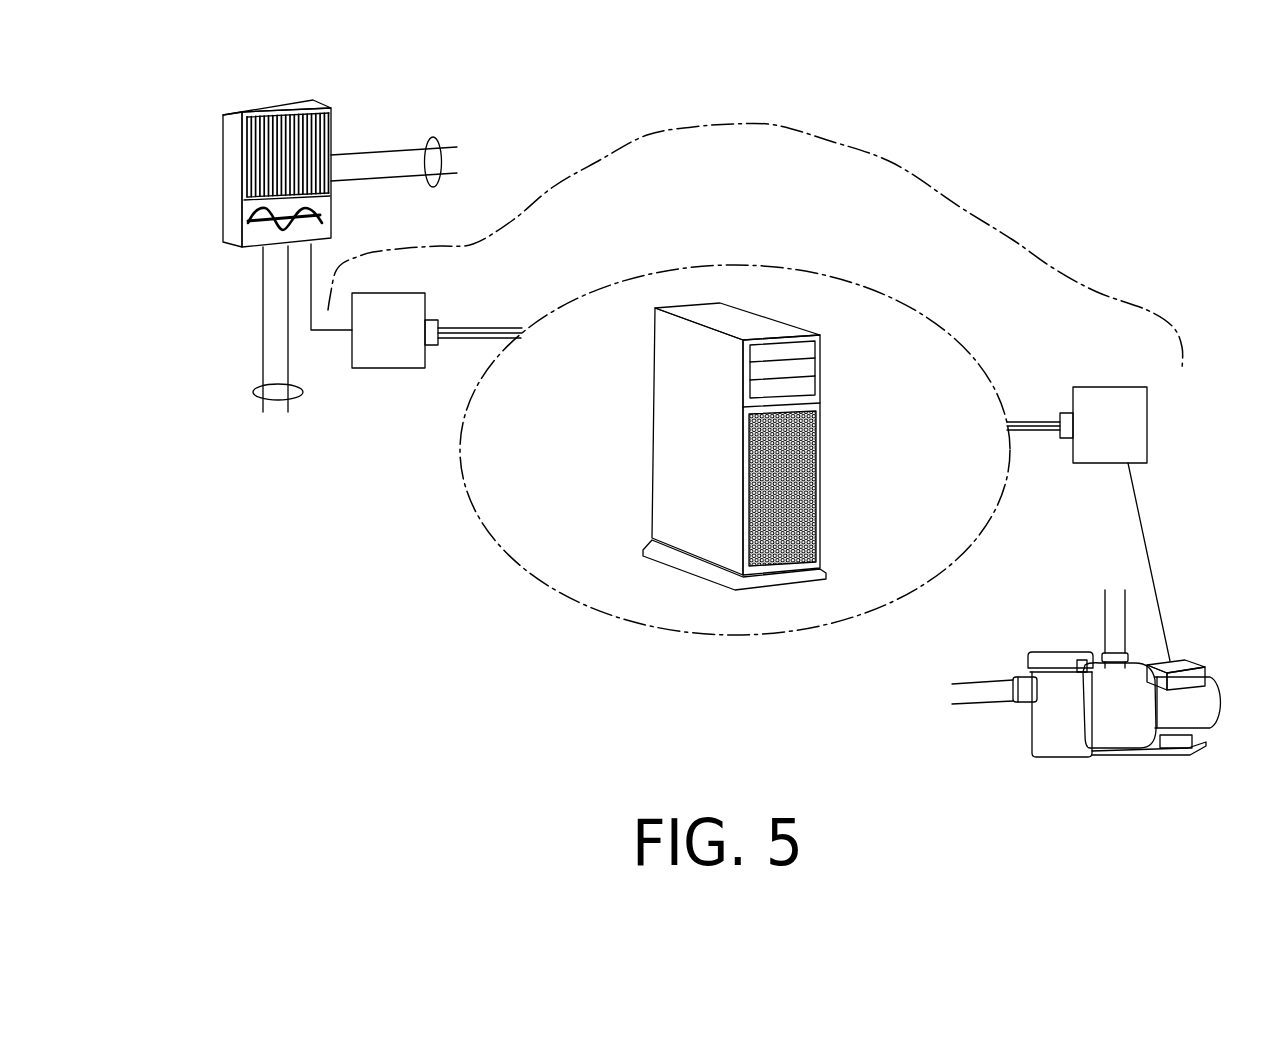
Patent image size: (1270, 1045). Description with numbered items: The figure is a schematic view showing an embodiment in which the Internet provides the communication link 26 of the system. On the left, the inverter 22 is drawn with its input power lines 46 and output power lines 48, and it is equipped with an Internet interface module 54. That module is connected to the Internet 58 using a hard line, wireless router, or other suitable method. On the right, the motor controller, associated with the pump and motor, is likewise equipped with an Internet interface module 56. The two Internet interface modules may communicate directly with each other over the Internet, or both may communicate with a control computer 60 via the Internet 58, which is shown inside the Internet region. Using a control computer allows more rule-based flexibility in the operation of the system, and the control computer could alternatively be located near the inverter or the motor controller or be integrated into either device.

The inverter 22 is at (237, 148).
The communication link 26 is at (773, 127).
The input power lines 46 is at (255, 391).
The output power lines 48 is at (433, 140).
The Internet interface module 54 is at (393, 343).
The Internet interface module 56 is at (1103, 403).
The Internet 58 is at (772, 267).
The control computer 60 is at (741, 322).